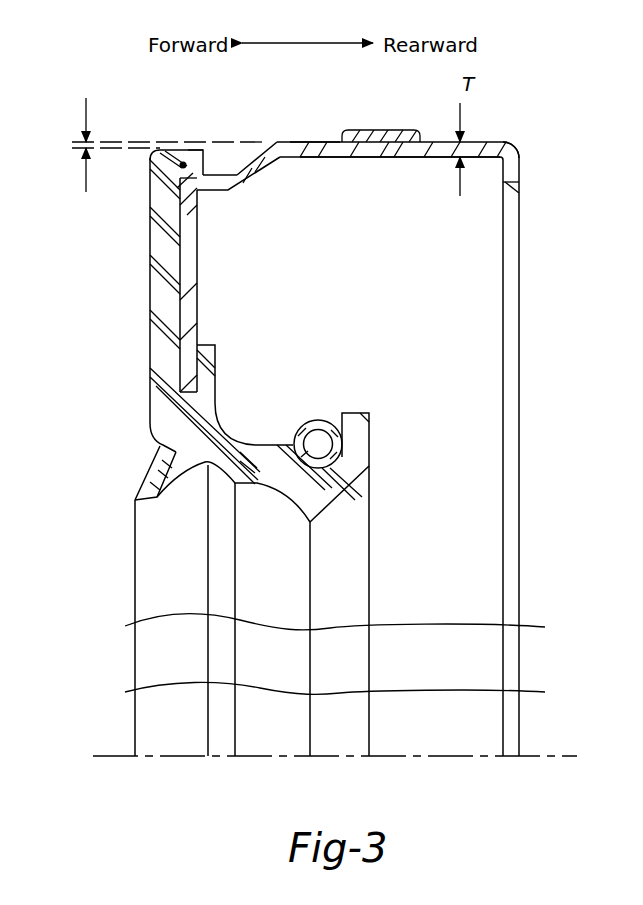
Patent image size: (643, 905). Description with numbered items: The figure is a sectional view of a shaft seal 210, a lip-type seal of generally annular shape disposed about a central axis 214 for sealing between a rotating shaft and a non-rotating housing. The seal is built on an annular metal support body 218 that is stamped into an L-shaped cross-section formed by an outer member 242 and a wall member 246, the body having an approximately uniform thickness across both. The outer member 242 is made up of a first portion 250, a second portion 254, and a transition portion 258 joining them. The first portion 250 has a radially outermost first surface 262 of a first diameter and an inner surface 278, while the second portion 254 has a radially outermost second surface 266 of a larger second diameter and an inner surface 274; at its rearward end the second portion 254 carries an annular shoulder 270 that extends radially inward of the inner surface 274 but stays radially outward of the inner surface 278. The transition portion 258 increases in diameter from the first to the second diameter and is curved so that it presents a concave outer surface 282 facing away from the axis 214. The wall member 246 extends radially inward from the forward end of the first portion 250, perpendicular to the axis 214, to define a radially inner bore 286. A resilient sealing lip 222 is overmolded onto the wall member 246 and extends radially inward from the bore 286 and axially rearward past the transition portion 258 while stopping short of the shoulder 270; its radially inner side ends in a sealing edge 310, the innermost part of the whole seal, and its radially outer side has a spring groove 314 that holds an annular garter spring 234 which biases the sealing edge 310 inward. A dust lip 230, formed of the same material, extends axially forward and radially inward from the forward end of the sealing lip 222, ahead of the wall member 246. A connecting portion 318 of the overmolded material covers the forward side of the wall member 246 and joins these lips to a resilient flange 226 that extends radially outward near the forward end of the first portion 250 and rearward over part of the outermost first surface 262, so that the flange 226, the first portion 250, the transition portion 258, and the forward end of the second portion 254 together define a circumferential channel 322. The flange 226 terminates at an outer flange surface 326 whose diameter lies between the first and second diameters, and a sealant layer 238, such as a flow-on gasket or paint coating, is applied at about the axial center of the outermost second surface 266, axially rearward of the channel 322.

The shaft seal 210 is at (531, 365).
The central axis 214 is at (418, 756).
The support body 218 is at (498, 146).
The sealing lip 222 is at (267, 467).
The flange 226 is at (189, 156).
The dust lip 230 is at (157, 490).
The garter spring 234 is at (313, 421).
The sealant layer 238 is at (397, 132).
The outer member 242 is at (320, 150).
The wall member 246 is at (187, 283).
The first portion 250 is at (192, 182).
The second portion 254 is at (393, 149).
The transition portion 258 is at (252, 176).
The outermost first surface 262 is at (193, 174).
The outermost second surface 266 is at (498, 149).
The shoulder 270 is at (507, 183).
The inner surface of the second portion 274 is at (427, 159).
The inner surface of the first portion 278 is at (207, 192).
The concave outer surface 282 is at (237, 185).
The bore 286 is at (183, 405).
The sealing edge 310 is at (308, 522).
The spring groove 314 is at (369, 468).
The connecting portion 318 is at (160, 292).
The channel 322 is at (212, 171).
The outer flange surface 326 is at (178, 153).